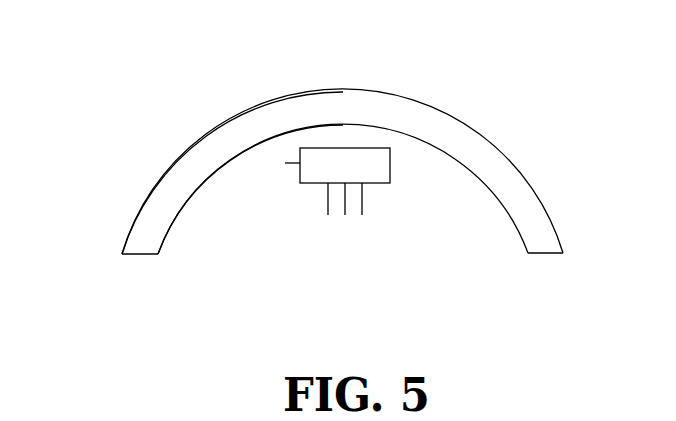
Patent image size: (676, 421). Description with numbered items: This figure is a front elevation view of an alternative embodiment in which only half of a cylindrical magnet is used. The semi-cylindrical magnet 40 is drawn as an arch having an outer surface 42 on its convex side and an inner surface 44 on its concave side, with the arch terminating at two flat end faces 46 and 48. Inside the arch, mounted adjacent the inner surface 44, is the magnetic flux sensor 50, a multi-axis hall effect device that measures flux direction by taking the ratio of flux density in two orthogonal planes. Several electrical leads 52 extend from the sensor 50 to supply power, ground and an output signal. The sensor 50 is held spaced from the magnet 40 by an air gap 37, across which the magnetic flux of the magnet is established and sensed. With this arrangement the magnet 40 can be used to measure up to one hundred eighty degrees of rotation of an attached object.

The air gap 37 is at (347, 141).
The semi-cylindrical magnet 40 is at (230, 122).
The outer surface 42 is at (157, 186).
The inner surface 44 is at (172, 228).
The end face 46 is at (136, 256).
The end face 48 is at (548, 255).
The magnetic flux sensor 50 is at (285, 163).
The electrical leads 52 is at (363, 208).